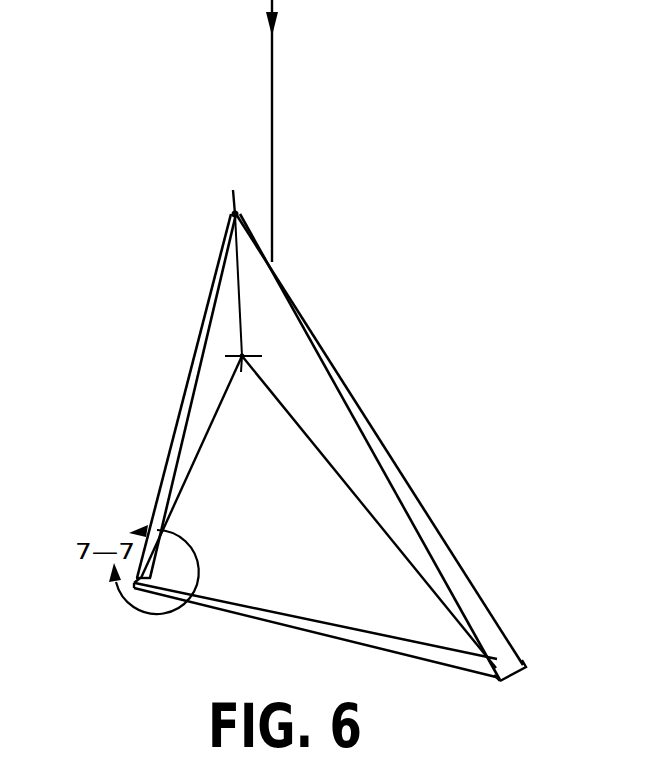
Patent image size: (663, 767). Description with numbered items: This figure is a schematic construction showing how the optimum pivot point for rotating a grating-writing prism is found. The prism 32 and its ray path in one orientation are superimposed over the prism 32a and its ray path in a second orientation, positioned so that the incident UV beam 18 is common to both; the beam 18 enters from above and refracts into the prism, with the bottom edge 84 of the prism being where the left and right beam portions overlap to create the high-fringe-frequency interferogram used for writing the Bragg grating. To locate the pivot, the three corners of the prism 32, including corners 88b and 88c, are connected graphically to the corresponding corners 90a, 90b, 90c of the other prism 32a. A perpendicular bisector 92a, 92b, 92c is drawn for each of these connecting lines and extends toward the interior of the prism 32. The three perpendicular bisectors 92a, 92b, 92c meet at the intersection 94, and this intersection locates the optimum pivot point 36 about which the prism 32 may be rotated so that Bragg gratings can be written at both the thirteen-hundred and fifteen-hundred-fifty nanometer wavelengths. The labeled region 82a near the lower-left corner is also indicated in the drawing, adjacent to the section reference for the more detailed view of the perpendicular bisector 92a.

The UV beam 18 is at (300, 79).
The prism 32 is at (395, 482).
The prism 32a is at (392, 455).
The pivot point 36 is at (220, 347).
The base arm 82a is at (110, 574).
The bottom edge 84 is at (316, 627).
The corner 88b is at (247, 216).
The corner 88c is at (489, 678).
The corner 90a is at (158, 581).
The corner 90b is at (227, 214).
The corner 90c is at (518, 655).
The perpendicular bisector 92a is at (189, 478).
The perpendicular bisector 92b is at (238, 313).
The perpendicular bisector 92c is at (316, 445).
The intersection 94 is at (278, 341).